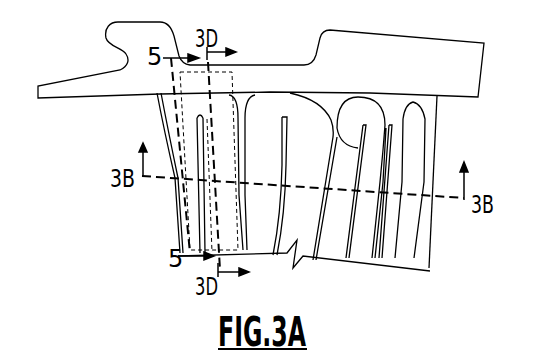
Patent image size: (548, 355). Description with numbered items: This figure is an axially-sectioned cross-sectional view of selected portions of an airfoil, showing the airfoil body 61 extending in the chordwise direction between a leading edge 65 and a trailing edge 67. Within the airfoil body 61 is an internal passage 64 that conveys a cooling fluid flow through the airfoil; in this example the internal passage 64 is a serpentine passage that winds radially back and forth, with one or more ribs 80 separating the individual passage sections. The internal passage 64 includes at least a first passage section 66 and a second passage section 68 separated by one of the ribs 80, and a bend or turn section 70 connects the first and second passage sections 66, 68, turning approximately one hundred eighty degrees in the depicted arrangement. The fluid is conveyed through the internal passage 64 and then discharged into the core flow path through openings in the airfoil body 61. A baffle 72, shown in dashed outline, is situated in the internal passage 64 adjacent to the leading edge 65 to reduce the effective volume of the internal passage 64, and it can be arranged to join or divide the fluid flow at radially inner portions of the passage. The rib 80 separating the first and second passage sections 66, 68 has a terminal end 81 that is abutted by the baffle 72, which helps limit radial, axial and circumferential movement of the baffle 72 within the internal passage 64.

The airfoil body 61 is at (435, 148).
The internal passage 64 is at (273, 108).
The leading edge 65 is at (176, 237).
The first passage section 66 is at (188, 211).
The trailing edge 67 is at (427, 180).
The second passage section 68 is at (233, 228).
The turn section 70 is at (172, 104).
The baffle 72 is at (236, 88).
The rib 80 is at (202, 190).
The terminal end 81 is at (198, 116).